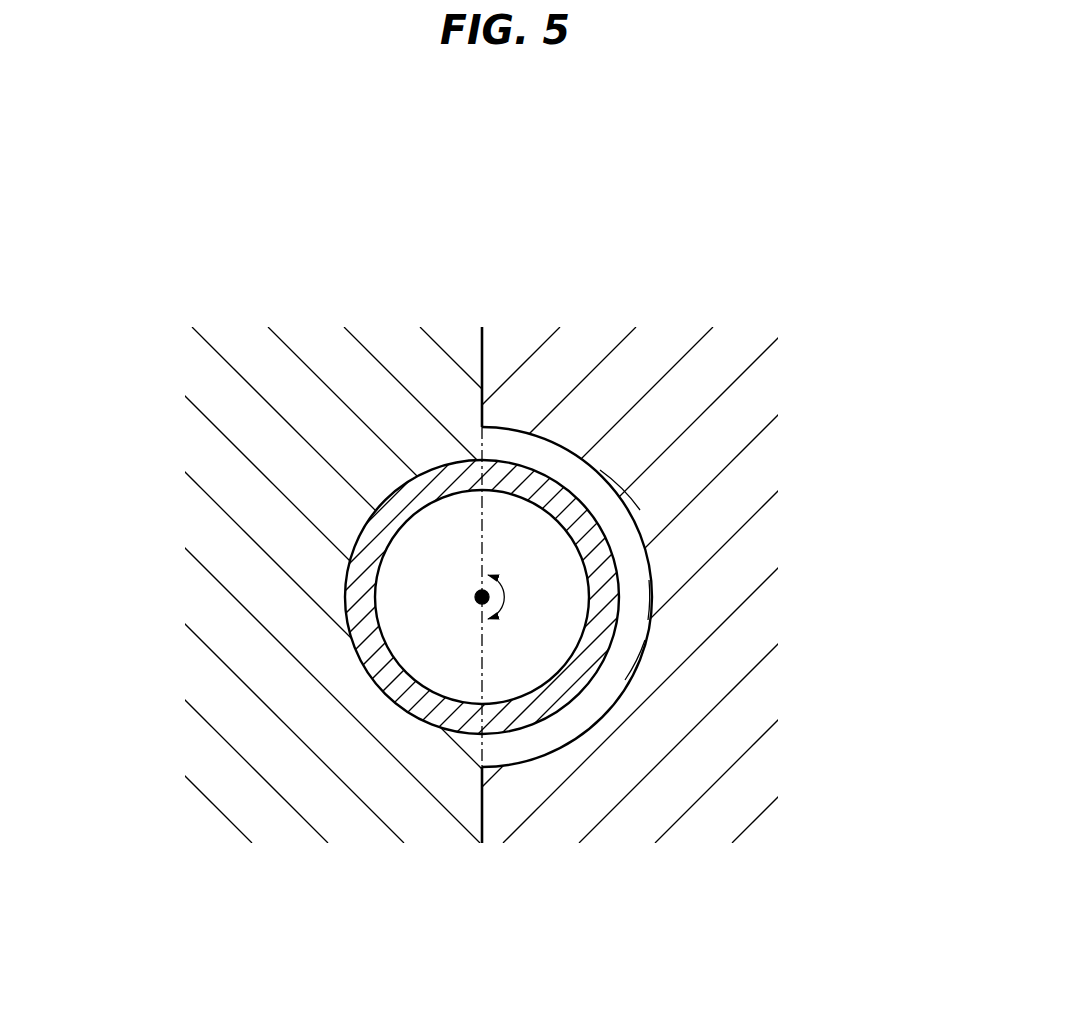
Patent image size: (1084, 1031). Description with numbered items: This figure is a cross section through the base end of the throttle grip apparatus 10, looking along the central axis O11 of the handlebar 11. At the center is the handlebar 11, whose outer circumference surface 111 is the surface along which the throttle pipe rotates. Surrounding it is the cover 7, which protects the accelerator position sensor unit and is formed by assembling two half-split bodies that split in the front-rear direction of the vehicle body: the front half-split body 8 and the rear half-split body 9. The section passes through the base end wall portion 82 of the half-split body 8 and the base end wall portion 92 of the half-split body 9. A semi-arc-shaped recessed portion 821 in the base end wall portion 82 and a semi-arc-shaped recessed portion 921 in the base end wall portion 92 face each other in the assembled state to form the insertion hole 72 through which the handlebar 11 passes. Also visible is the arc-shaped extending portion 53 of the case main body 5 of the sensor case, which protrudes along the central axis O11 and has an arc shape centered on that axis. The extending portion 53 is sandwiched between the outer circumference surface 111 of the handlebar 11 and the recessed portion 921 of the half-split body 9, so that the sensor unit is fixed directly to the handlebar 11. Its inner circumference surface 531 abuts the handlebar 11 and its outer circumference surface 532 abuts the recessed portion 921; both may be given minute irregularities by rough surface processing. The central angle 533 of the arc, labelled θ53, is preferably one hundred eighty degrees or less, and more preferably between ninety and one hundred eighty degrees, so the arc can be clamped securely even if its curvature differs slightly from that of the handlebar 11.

The case main body 5 is at (487, 578).
The cover 7 is at (635, 220).
The half-split body 8 is at (468, 533).
The base end wall portion 82 is at (368, 375).
The half-split body 9 is at (564, 533).
The base end wall portion 92 is at (572, 360).
The throttle grip apparatus 10 is at (840, 220).
The handlebar 11 is at (355, 530).
The outer circumference surface 111 is at (345, 597).
The central axis O11 is at (482, 597).
The extending portion 53 is at (600, 548).
The inner circumference surface 531 is at (603, 549).
The outer circumference surface 532 is at (575, 594).
The central angle 533 is at (585, 603).
The insertion hole 72 is at (470, 842).
The recessed portion 821 is at (403, 697).
The recessed portion 921 is at (522, 740).